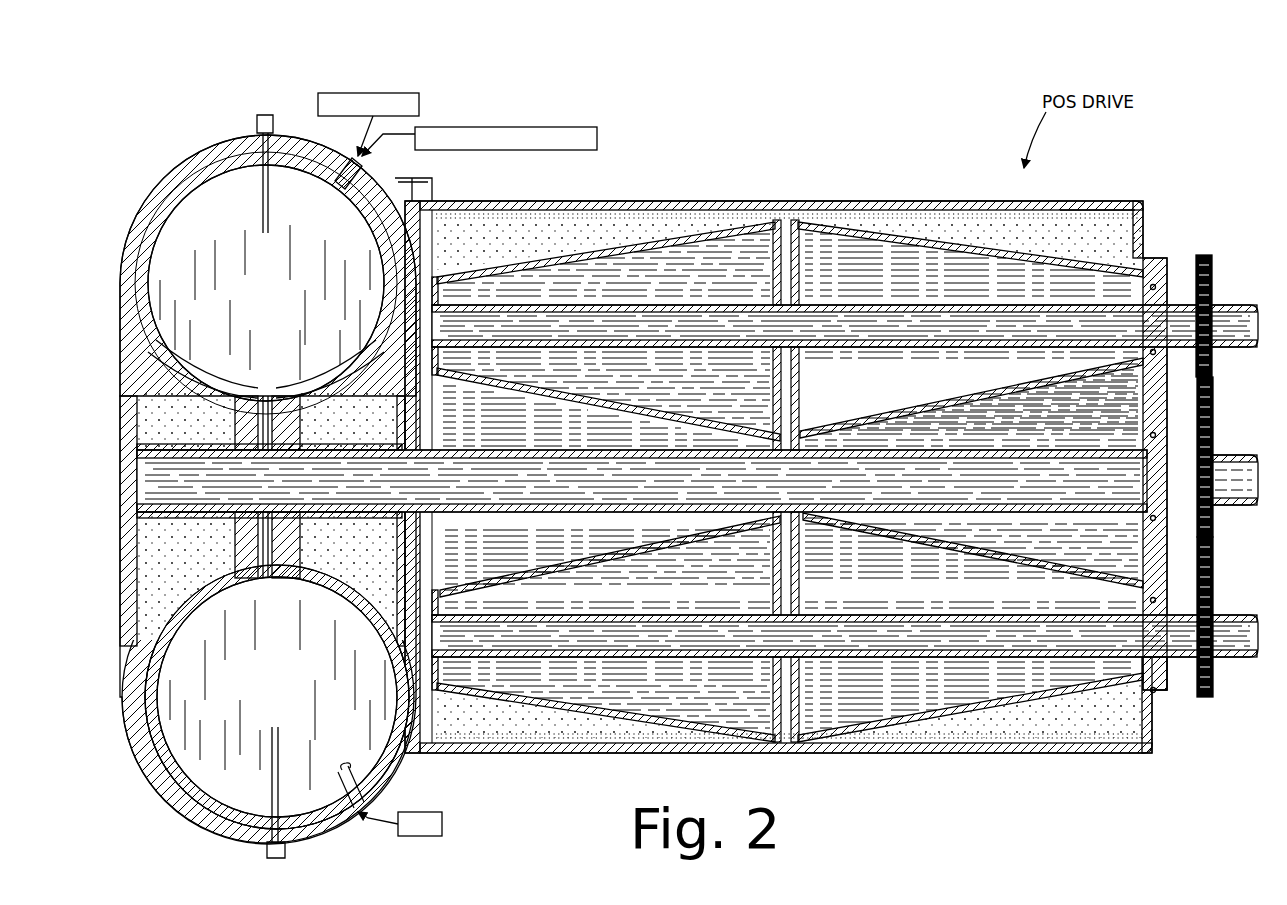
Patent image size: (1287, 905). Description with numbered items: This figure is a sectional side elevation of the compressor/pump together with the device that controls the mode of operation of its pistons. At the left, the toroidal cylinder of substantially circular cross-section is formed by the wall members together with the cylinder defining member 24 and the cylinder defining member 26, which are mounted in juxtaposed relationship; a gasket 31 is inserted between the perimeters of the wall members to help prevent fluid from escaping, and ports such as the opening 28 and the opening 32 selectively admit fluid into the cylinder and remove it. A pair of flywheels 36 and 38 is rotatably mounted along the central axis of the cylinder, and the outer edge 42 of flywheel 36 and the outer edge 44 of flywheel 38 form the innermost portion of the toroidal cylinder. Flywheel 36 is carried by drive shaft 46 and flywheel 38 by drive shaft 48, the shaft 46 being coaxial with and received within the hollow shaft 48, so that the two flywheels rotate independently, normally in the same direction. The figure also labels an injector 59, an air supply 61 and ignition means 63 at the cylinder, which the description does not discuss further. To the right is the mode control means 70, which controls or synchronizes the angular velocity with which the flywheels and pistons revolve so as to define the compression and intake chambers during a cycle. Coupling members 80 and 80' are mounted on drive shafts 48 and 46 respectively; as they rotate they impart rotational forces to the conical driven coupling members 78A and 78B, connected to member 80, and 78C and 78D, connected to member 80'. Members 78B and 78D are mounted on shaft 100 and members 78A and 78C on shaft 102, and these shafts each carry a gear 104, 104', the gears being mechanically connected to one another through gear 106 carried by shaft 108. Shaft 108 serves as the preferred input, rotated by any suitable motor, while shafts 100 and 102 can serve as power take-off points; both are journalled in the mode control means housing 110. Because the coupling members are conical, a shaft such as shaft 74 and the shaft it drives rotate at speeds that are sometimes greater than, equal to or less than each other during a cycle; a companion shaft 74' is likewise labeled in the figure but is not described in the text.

The cylinder defining member 24 is at (156, 425).
The cylinder defining member 26 is at (344, 425).
The opening 28 is at (366, 182).
The gasket 31 is at (260, 116).
The opening 32 is at (342, 768).
The flywheel 36 is at (205, 388).
The flywheel 38 is at (332, 386).
The outer edge 42 is at (258, 398).
The outer edge 44 is at (283, 398).
The drive shaft 46 is at (245, 470).
The drive shaft 48 is at (282, 432).
The injector 59 is at (419, 105).
The air supply 61 is at (442, 824).
The ignition means 63 is at (597, 139).
The mode control means 70 is at (810, 198).
The shaft 74 is at (845, 615).
The upper shaft 74' is at (845, 305).
The driven coupling member 78A is at (678, 702).
The driven coupling member 78B is at (648, 288).
The driven coupling member 78C is at (876, 702).
The driven coupling member 78D is at (886, 288).
The coupling member 80 is at (606, 396).
The coupling member 80' is at (971, 399).
The shaft 100 is at (1172, 300).
The shaft 102 is at (1172, 660).
The gear 104 is at (1232, 291).
The gear 104' is at (1230, 646).
The gear 106 is at (1216, 548).
The shaft 108 is at (1237, 452).
The mode control means housing 110 is at (1090, 200).